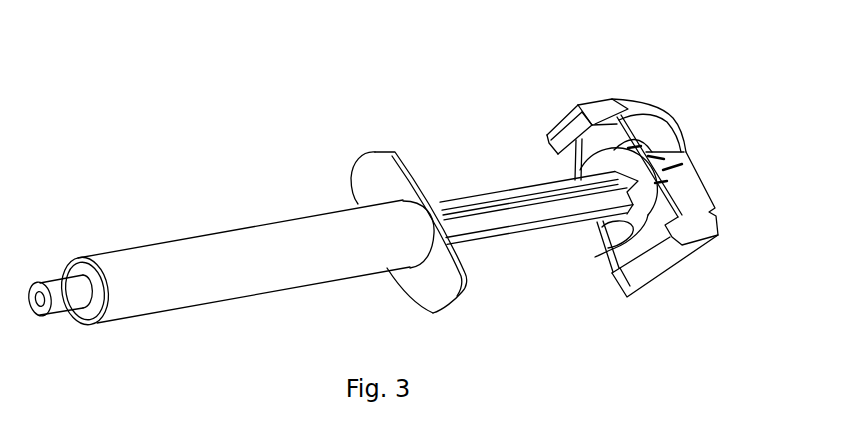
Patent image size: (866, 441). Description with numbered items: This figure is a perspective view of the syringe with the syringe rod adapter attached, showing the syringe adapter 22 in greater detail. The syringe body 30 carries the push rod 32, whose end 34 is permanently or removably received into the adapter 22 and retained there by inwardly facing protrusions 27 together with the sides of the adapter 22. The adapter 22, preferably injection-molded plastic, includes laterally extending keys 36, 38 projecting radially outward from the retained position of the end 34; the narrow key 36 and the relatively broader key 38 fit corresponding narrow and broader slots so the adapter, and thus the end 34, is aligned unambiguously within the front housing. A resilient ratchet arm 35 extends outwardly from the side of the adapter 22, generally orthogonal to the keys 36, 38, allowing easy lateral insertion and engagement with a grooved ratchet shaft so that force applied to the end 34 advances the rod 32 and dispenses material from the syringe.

The syringe adapter 22 is at (706, 191).
The inwardly facing protrusions 27 is at (595, 257).
The syringe body 30 is at (160, 268).
The push rod 32 is at (474, 200).
The push rod end 34 is at (620, 166).
The resilient ratchet arm 35 is at (672, 145).
The narrow key 36 is at (572, 120).
The broader key 38 is at (673, 272).